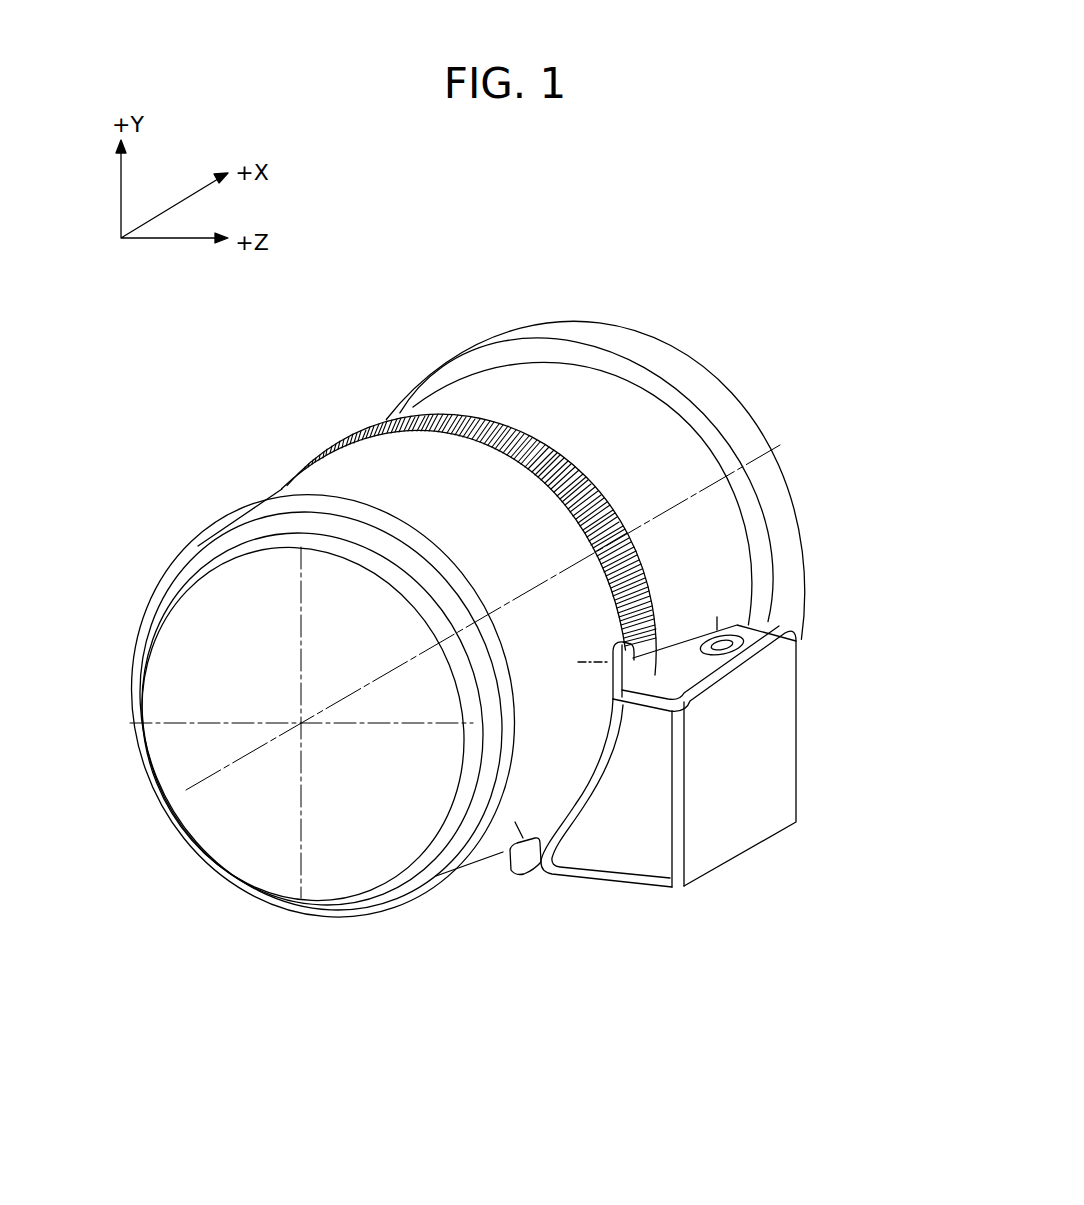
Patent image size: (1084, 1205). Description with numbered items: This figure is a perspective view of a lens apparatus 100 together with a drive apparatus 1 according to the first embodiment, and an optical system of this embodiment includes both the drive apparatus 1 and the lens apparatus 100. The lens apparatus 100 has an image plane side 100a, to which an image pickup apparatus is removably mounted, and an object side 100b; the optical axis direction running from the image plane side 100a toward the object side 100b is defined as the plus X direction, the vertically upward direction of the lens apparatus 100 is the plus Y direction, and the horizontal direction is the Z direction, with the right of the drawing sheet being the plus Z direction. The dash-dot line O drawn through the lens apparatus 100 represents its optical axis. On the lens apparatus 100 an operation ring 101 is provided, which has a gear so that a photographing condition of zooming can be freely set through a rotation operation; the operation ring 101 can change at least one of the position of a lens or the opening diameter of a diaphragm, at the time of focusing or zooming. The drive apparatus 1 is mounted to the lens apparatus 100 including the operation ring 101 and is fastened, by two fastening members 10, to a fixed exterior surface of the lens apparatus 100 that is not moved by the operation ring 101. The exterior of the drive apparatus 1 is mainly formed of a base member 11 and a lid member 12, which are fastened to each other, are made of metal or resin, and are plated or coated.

The lens apparatus 100 is at (808, 252).
The image plane side 100a is at (243, 618).
The object side 100b is at (738, 386).
The operation ring 101 is at (380, 425).
The optical axis O is at (680, 508).
The drive apparatus 1 is at (798, 702).
The fastening members 10 is at (655, 670).
The base member 11 is at (625, 838).
The lid member 12 is at (693, 855).